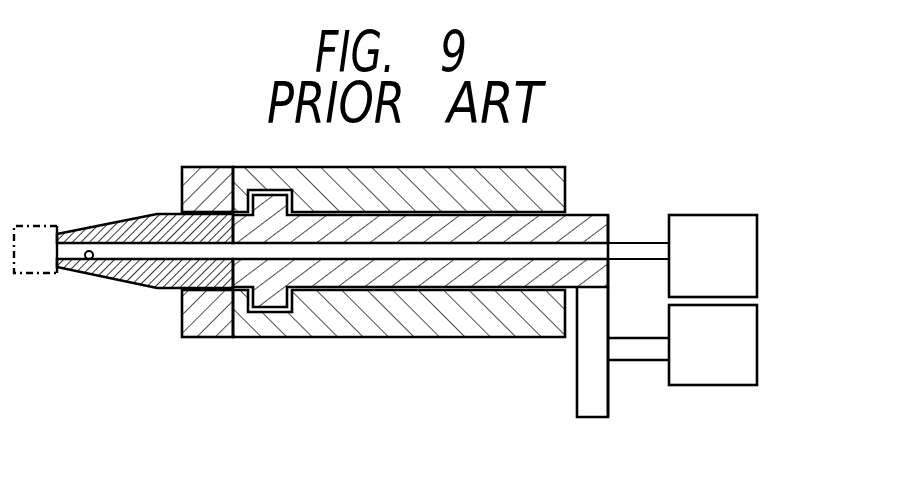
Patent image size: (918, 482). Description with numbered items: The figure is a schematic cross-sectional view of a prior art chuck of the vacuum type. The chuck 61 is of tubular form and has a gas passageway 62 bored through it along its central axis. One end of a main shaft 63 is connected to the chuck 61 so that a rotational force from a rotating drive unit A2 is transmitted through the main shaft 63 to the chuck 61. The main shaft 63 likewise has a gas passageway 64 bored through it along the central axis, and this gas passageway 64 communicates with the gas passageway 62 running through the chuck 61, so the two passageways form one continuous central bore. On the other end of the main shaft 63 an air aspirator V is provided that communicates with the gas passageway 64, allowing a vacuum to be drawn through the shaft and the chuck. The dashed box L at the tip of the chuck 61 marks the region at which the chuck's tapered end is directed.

The chuck 61 is at (136, 293).
The gas passageway 62 is at (89, 262).
The main shaft 63 is at (425, 281).
The gas passageway 64 is at (358, 261).
The light source L is at (42, 270).
The air aspirator V is at (735, 235).
The rotating drive unit A2 is at (740, 373).